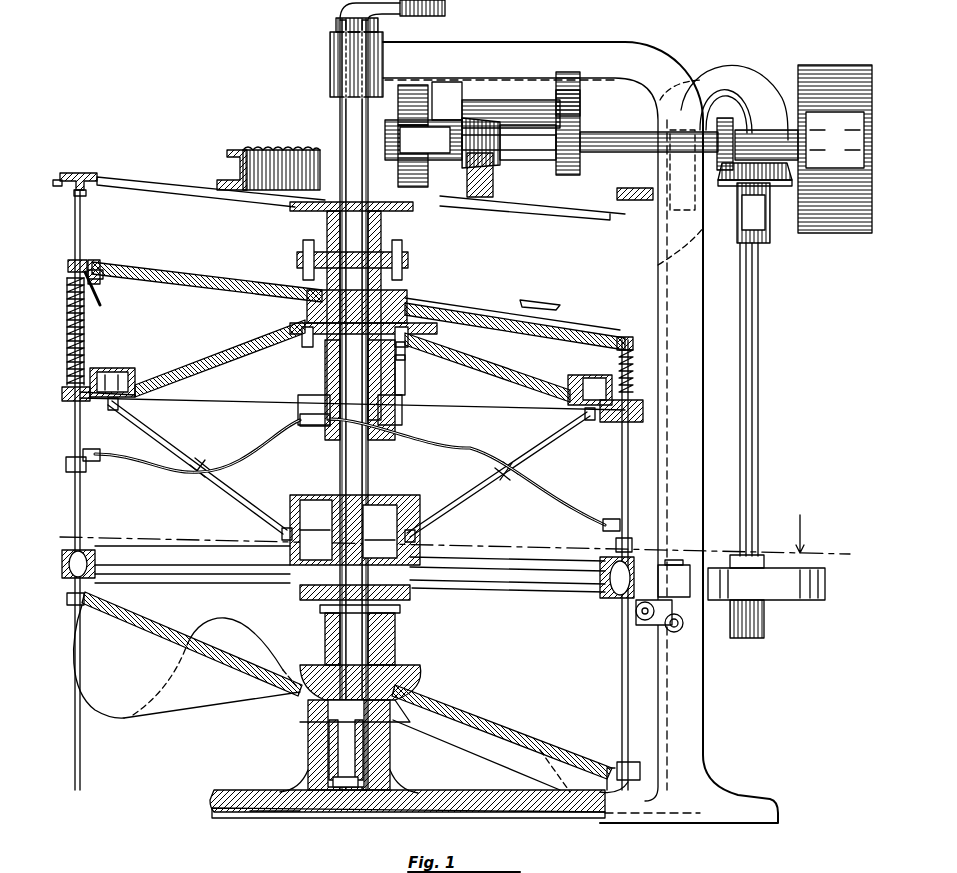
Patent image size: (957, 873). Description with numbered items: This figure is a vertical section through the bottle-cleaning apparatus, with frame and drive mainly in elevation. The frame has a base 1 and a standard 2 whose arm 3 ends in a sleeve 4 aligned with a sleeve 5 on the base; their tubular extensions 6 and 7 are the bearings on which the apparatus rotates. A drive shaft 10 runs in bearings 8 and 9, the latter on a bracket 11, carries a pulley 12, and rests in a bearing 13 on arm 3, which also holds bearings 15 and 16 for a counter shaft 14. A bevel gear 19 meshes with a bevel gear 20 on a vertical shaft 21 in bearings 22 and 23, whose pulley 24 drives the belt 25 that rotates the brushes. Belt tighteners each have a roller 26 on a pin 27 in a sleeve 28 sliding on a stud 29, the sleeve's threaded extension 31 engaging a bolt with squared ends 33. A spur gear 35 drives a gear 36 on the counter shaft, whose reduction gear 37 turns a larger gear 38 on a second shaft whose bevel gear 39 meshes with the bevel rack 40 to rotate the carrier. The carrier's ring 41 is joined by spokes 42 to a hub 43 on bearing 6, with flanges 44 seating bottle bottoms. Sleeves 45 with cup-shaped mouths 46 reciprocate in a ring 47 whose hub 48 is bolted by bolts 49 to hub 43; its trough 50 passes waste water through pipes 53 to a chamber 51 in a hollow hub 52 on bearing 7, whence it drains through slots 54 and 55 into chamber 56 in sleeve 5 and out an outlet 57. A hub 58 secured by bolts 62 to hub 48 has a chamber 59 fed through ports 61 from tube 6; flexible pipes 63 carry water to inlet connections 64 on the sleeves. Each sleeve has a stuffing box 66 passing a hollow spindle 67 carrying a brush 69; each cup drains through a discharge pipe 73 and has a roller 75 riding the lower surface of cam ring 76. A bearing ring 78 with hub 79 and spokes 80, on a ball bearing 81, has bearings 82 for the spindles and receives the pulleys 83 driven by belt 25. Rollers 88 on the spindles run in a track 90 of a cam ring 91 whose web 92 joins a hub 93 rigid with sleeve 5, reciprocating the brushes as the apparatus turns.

The base plate 1 is at (565, 804).
The standard / column 2 is at (580, 432).
The overhanging arm 3 is at (61, 523).
The bracket 4 is at (330, 66).
The lower bearing column 5 is at (308, 750).
The vertical shaft 6 is at (346, 112).
The sleeve 7 is at (378, 655).
The shaft bearing 8 is at (684, 163).
The drive shaft 9 is at (768, 130).
The horizontal shaft 10 is at (614, 138).
The gear cover 11 is at (745, 75).
The fly wheel / pulley 12 is at (835, 149).
The gear sleeve 13 is at (540, 152).
The counter shaft 14 is at (495, 108).
The pinion 15 is at (552, 99).
The gear housing 16 is at (447, 101).
The bevel gear 19 is at (724, 115).
The bevel gear 20 is at (735, 182).
The vertical shaft 21 is at (760, 388).
The bearing bushing 22 is at (770, 240).
The collar 23 is at (766, 625).
The pulley 24 is at (766, 557).
The section line 25 is at (640, 570).
The bracket 26 is at (685, 565).
The link 27 is at (655, 622).
The pivot 28 is at (682, 630).
The lever 29 is at (673, 632).
The link 31 is at (650, 620).
The pivot pin 33 is at (636, 608).
The shaft 35 is at (582, 166).
The gear 36 is at (582, 100).
The gear 37 is at (398, 112).
The gear 38 is at (398, 172).
The bevel pinion 39 is at (498, 158).
The ring gear 40 is at (300, 150).
The top plate 41 is at (88, 174).
The frame bar 42 is at (185, 192).
The hub housing 43 is at (382, 228).
The frame bar 44 is at (645, 200).
The vertical rod 45 is at (86, 320).
The nut 46 is at (68, 262).
The nut 47 is at (64, 402).
The pinion / bolt 48 is at (423, 140).
The bolt 49 is at (408, 250).
The rim block 50 is at (118, 372).
The bearing block 51 is at (390, 518).
The frame 52 is at (300, 505).
The cross link 53 is at (228, 478).
The bearing block 54 is at (316, 530).
The step bearing 55 is at (364, 748).
The cap 56 is at (310, 728).
The bearing plate 57 is at (380, 768).
The hub 58 is at (384, 474).
The block 59 is at (398, 408).
The block 61 is at (342, 410).
The bolt 62 is at (404, 358).
The cable 63 is at (218, 462).
The cable fitting 64 is at (88, 453).
The block 66 is at (86, 470).
The rod 67 is at (80, 514).
The clamp 69 is at (88, 186).
The pin 73 is at (102, 298).
The nut 75 is at (103, 276).
The disc 76 is at (95, 262).
The bar 78 is at (150, 565).
The flange 79 is at (382, 605).
The bar 80 is at (495, 578).
The washer 81 is at (375, 628).
The nut 82 is at (62, 599).
The ball joint 83 is at (92, 558).
The bracket 88 is at (618, 765).
The spring arc 90 is at (83, 607).
The band 91 is at (100, 598).
The band 92 is at (495, 745).
The cap 93 is at (400, 672).